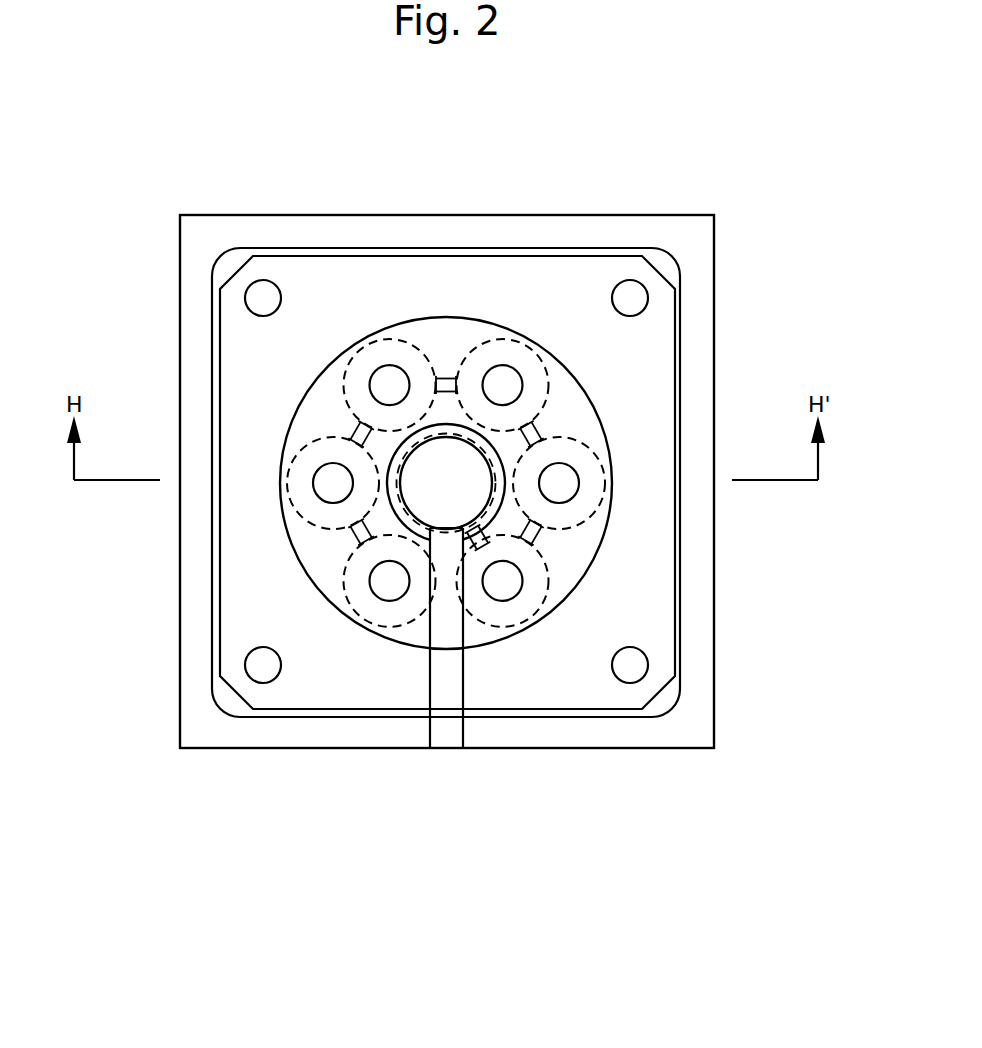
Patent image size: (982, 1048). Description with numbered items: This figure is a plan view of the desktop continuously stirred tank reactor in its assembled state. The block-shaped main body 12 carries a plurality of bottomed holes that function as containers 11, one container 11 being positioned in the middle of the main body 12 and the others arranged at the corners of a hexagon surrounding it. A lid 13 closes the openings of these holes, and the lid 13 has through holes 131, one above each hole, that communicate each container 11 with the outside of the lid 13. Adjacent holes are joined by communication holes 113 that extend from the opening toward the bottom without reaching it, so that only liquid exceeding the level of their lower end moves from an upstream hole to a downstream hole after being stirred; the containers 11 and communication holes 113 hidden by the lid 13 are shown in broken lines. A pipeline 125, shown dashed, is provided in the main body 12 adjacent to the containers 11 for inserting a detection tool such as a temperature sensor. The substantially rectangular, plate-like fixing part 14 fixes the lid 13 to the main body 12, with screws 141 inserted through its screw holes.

The container 11 is at (415, 342).
The main body 12 is at (713, 215).
The lid 13 is at (490, 443).
The fixing part 14 is at (260, 567).
The communication hole 113 is at (540, 538).
The pipeline 125 is at (463, 748).
The through hole 131 is at (388, 366).
The screw 141 is at (628, 682).